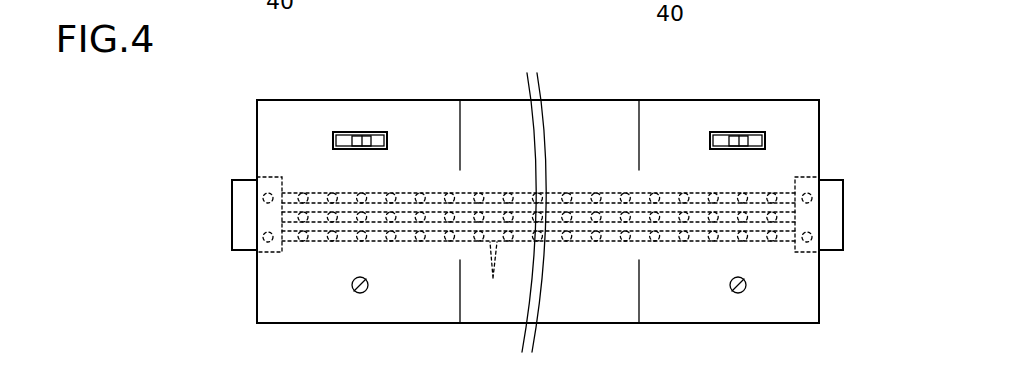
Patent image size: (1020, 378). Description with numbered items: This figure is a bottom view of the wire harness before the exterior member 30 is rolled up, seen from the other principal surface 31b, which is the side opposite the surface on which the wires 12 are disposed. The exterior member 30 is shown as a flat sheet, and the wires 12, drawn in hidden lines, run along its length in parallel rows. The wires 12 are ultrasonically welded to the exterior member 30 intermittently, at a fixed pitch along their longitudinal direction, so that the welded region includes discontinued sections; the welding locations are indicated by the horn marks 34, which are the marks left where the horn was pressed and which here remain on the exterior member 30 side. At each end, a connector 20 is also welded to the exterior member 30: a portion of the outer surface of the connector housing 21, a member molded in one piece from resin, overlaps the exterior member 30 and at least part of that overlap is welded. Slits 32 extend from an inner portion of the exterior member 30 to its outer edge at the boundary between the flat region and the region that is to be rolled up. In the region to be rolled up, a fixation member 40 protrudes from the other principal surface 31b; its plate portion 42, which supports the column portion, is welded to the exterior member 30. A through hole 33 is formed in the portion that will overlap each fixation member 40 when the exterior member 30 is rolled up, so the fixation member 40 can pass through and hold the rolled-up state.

The wire 12 is at (495, 274).
The connector 20 is at (230, 192).
The connector housing 21 is at (241, 244).
The exterior member 30 is at (287, 112).
The other principal surface 31b is at (408, 305).
The slit 32 is at (462, 130).
The through hole 33 is at (360, 293).
The horn mark 34 is at (263, 235).
The fixation member 40 is at (381, 130).
The plate portion 42 is at (338, 132).